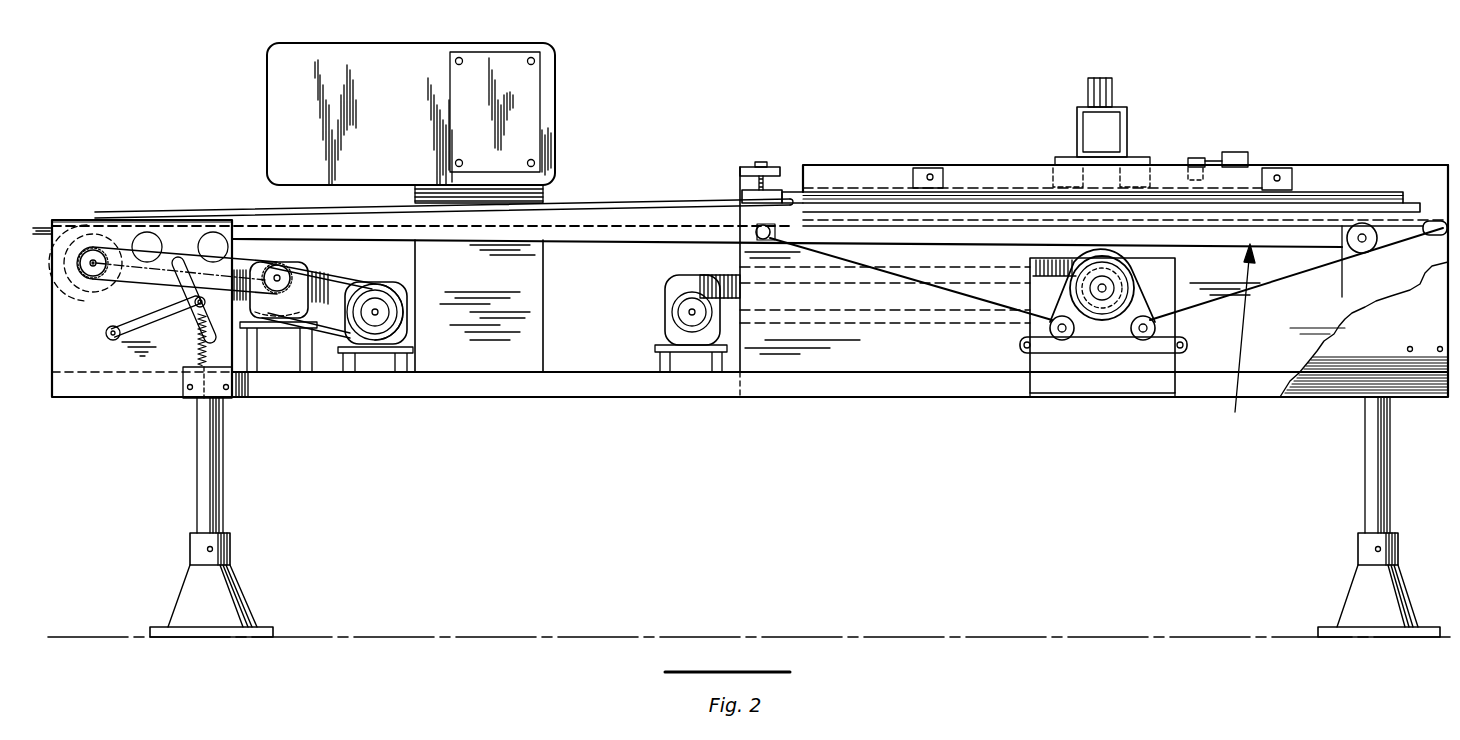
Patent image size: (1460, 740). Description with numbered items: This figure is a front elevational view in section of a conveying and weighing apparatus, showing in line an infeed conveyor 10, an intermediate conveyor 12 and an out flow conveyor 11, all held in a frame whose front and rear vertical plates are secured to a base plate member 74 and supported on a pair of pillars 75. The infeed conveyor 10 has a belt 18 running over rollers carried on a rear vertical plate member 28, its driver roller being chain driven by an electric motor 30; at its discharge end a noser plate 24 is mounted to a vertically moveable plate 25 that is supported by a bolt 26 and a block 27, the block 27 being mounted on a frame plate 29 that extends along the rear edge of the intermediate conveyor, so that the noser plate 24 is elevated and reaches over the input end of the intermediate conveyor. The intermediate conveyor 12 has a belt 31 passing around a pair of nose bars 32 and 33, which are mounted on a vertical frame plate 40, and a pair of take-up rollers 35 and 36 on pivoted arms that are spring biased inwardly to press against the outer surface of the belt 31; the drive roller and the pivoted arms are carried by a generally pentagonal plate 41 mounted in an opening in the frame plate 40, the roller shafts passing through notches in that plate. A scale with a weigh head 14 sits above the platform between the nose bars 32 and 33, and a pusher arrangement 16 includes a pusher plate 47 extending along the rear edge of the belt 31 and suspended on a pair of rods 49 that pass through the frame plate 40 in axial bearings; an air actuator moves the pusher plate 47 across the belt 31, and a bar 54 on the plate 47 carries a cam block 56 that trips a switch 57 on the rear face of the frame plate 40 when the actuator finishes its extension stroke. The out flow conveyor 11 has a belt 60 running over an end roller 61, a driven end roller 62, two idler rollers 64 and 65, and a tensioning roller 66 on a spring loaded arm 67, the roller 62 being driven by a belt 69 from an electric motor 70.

The infeed conveyor 10 is at (90, 216).
The out flow conveyor 11 is at (1243, 340).
The intermediate conveyor 12 is at (1333, 196).
The weigh head 14 is at (1108, 128).
The pusher arrangement 16 is at (1268, 172).
The belt 18 is at (648, 207).
The noser plate 24 is at (787, 200).
The vertically moveable plate 25 is at (768, 190).
The bolt 26 is at (755, 168).
The block 27 is at (740, 190).
The rear vertical plate member 28 is at (121, 385).
The frame plate 29 is at (830, 168).
The electric motor 30 is at (382, 333).
The belt 31 is at (1297, 196).
The nose bar 32 is at (750, 226).
The nose bar 33 is at (1430, 200).
The take-up roller 35 is at (1060, 335).
The take-up roller 36 is at (1147, 336).
The vertical frame plate 40 is at (882, 345).
The generally pentagonal plate 41 is at (1103, 348).
The pusher plate 47 is at (990, 172).
The rods 49 is at (928, 170).
The bar 54 is at (1192, 158).
The cam block 56 is at (1210, 160).
The switch 57 is at (1232, 152).
The belt 60 is at (588, 200).
The end roller 61 is at (1365, 225).
The driven end roller 62 is at (80, 292).
The idler roller 64 is at (149, 235).
The idler roller 65 is at (214, 232).
The tensioning roller 66 is at (207, 316).
The spring loaded arm 67 is at (163, 333).
The belt 69 is at (127, 265).
The electric motor 70 is at (290, 312).
The base plate member 74 is at (878, 382).
The pillars 75 is at (215, 495).